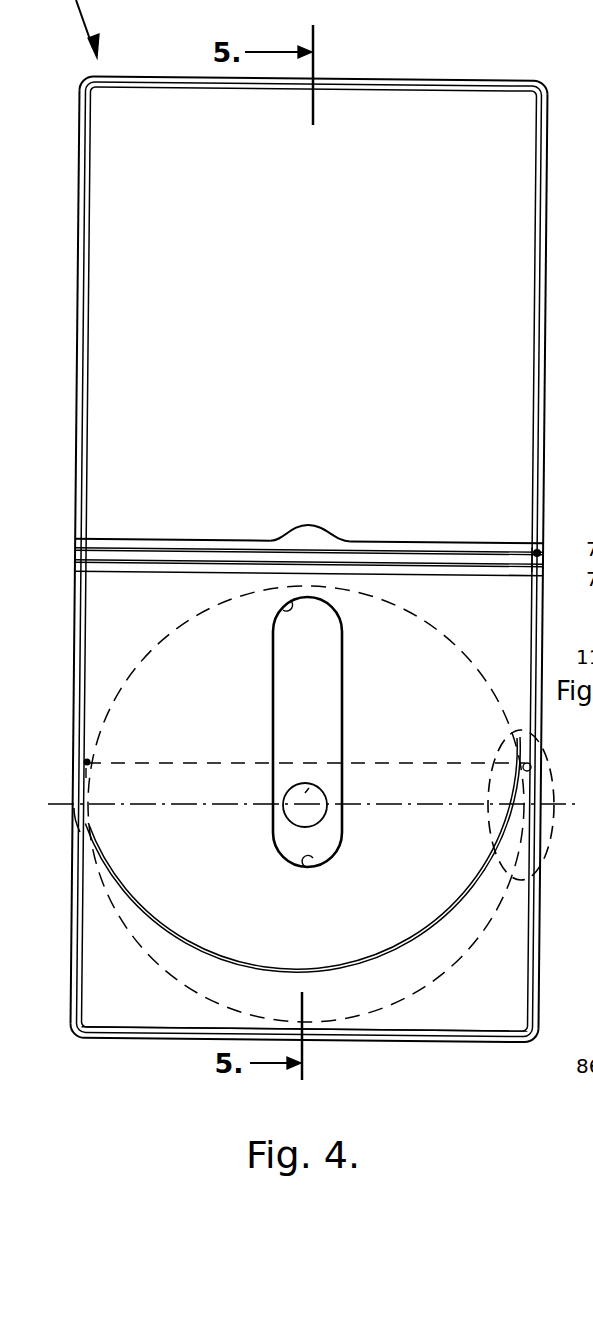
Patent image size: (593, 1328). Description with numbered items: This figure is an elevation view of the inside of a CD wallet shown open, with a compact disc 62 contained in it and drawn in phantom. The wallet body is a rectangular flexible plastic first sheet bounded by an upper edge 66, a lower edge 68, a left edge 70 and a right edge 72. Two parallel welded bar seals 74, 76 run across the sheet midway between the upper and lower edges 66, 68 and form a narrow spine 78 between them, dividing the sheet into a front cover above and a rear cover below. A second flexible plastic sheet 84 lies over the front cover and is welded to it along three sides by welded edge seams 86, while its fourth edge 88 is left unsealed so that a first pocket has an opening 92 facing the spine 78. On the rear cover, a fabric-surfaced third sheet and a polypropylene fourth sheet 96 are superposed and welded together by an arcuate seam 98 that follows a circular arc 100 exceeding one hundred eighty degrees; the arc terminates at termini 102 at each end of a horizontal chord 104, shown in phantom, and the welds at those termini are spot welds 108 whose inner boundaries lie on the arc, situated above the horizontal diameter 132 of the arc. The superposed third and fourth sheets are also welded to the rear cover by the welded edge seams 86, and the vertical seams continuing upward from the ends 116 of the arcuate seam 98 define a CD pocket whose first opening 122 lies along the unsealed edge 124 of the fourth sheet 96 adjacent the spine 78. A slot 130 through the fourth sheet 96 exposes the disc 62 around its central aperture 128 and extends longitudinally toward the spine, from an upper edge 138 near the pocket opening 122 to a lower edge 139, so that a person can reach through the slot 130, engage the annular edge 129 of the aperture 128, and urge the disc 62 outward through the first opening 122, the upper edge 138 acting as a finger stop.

The compact disc 62 is at (136, 660).
The upper edge 66 is at (148, 74).
The lower edge 68 is at (186, 1044).
The left edge 70 is at (76, 450).
The right edge 72 is at (545, 492).
The bar seal 74 is at (520, 558).
The bar seal 76 is at (520, 577).
The spine 78 is at (545, 552).
The second flexible plastic panel 84 is at (320, 313).
The welded edge seams 86 is at (415, 96).
The fourth edge 88 is at (402, 541).
The opening 92 is at (228, 536).
The fourth flexible plastic panel 96 is at (320, 951).
The arcuate seam 98 is at (455, 975).
The circular arc 100 is at (400, 1005).
The termini 102 is at (92, 768).
The horizontal chord 104 is at (170, 760).
The spot welds 108 is at (90, 760).
The ends of the arcuate seam 116 is at (75, 820).
The first opening 122 is at (398, 570).
The unsealed edge 124 is at (477, 575).
The central aperture 128 is at (328, 806).
The annular edge 129 is at (310, 782).
The slot 130 is at (342, 720).
The horizontal diameter 132 is at (195, 808).
The upper edge of the slot 138 is at (296, 600).
The lower edge of the slot 139 is at (316, 860).